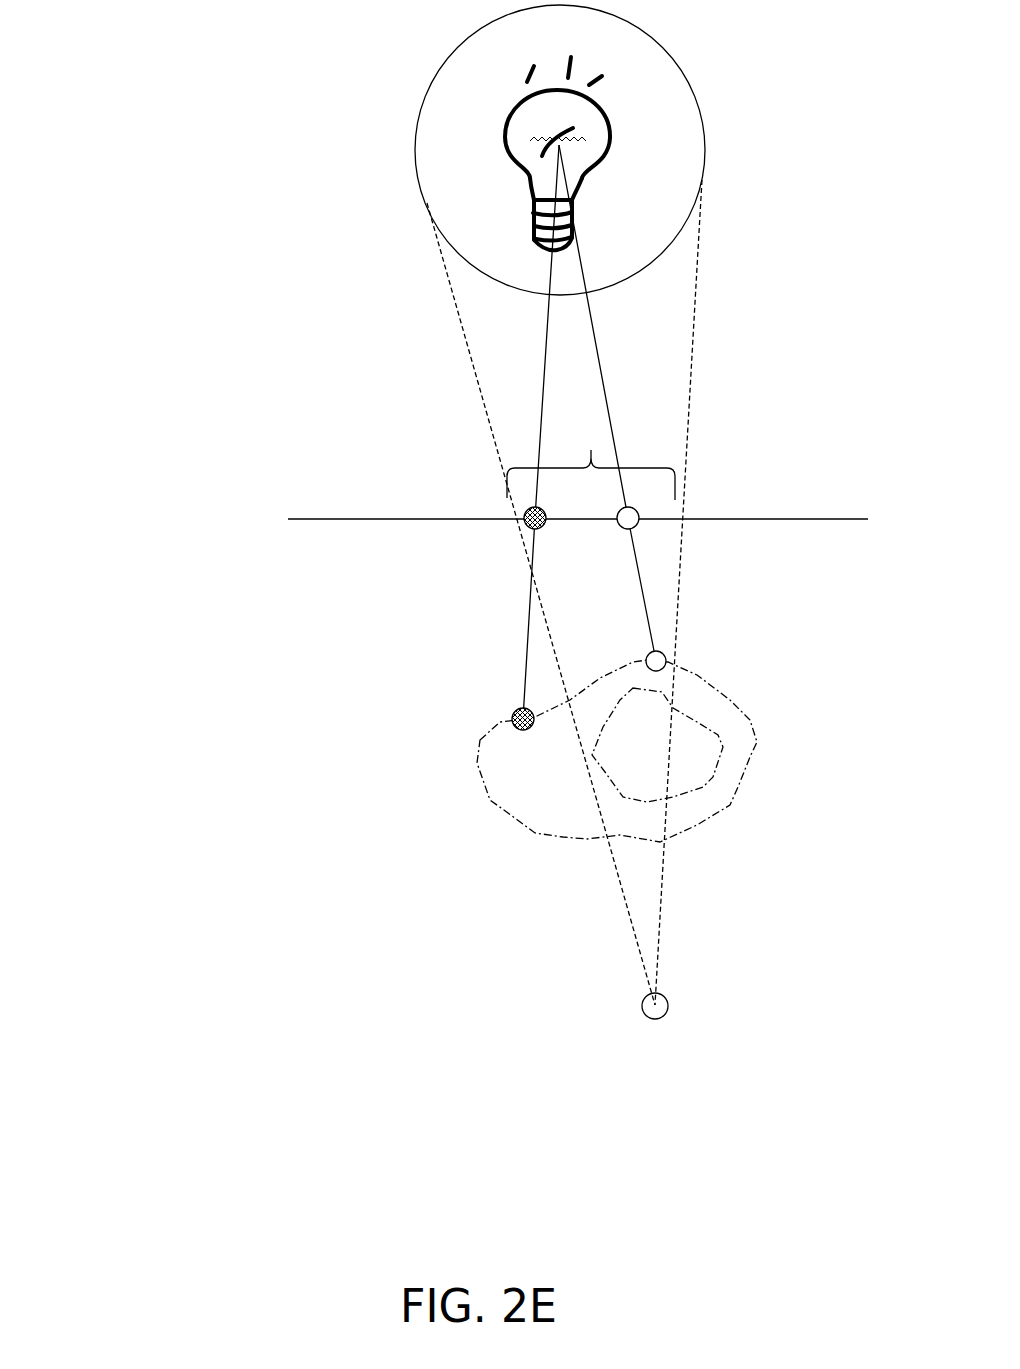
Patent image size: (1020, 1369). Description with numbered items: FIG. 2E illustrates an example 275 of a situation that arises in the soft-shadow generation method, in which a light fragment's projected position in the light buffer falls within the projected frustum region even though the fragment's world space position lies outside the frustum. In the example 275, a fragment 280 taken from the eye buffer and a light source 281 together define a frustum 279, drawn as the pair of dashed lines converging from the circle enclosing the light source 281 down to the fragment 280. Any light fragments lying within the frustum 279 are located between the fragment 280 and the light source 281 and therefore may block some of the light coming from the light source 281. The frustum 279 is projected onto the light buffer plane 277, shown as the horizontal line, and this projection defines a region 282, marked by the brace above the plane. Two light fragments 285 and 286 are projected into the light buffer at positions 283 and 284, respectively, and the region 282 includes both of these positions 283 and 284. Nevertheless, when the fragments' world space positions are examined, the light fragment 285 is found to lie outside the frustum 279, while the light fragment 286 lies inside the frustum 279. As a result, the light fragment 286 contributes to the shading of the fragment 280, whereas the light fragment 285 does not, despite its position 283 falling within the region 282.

The example 275 is at (123, 168).
The light buffer plane 277 is at (466, 518).
The frustum 279 is at (480, 405).
The fragment 280 is at (653, 1019).
The light source 281 is at (415, 157).
The region 282 is at (591, 458).
The position 283 is at (531, 528).
The position 284 is at (633, 515).
The light fragment 285 is at (512, 715).
The light fragment 286 is at (657, 660).